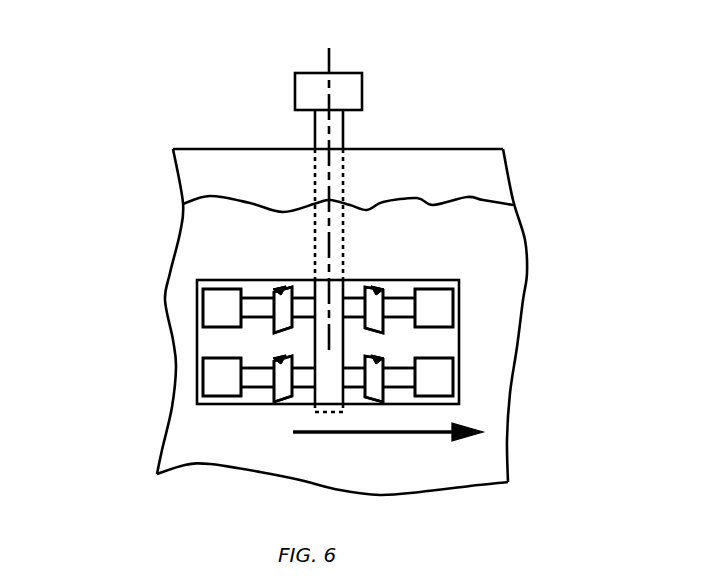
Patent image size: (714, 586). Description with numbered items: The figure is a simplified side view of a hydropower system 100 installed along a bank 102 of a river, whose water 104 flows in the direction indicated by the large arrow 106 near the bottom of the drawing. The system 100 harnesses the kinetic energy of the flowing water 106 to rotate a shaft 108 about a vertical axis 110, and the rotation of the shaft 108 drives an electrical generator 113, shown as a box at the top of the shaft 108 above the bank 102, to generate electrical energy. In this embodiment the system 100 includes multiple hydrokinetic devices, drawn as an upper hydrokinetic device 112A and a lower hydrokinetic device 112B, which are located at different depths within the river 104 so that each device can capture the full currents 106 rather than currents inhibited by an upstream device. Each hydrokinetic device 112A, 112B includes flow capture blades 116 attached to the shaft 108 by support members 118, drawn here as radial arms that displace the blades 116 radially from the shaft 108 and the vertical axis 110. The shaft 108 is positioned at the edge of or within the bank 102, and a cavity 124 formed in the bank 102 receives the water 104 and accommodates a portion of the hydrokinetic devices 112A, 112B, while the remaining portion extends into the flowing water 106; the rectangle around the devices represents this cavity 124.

The hydropower system 100 is at (196, 52).
The bank 102 is at (191, 150).
The water 104 is at (198, 223).
The water flow 106 is at (342, 436).
The shaft 108 is at (317, 126).
The vertical axis 110 is at (330, 56).
The hydrokinetic device 112A is at (182, 287).
The hydrokinetic device 112B is at (182, 378).
The electrical generator 113 is at (356, 88).
The flow capture blades 116 is at (282, 287).
The support members 118 is at (396, 305).
The cavity 124 is at (255, 282).